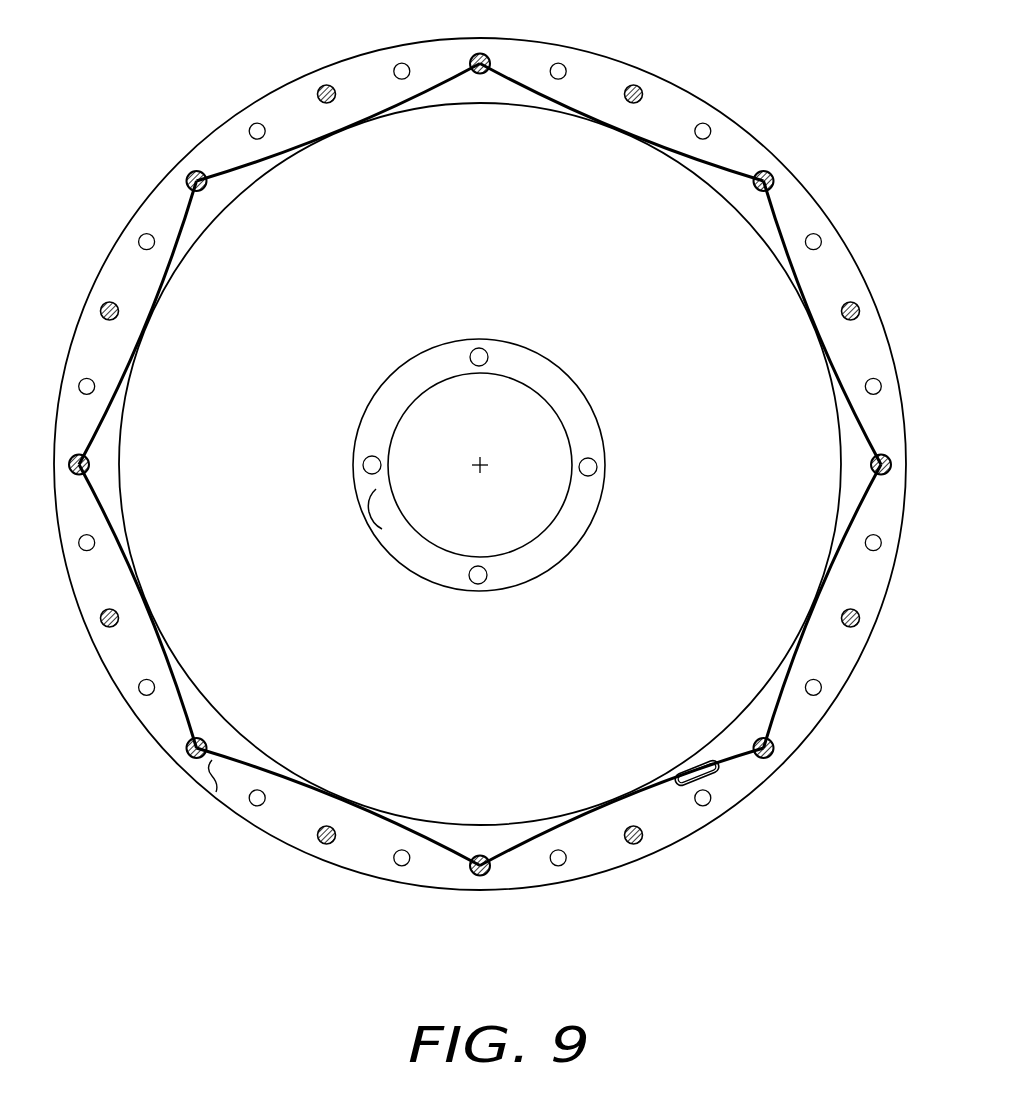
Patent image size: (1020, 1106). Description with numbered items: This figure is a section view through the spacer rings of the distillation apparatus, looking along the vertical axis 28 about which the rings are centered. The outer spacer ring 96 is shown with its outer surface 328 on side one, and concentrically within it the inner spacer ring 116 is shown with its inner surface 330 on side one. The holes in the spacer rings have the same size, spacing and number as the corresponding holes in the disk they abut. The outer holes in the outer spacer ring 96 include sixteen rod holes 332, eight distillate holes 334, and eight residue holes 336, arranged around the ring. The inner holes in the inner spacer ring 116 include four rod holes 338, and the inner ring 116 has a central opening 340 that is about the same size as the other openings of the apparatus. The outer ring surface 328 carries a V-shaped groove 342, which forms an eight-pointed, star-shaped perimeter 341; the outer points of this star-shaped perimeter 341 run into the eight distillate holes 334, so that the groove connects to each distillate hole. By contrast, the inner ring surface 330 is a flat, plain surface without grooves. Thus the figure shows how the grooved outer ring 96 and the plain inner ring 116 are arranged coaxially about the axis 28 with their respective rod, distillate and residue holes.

The vertical axis 28 is at (482, 468).
The outer spacer ring 96 is at (218, 802).
The inner spacer ring 116 is at (392, 557).
The outer surface 328 is at (208, 775).
The inner surface 330 is at (370, 512).
The rod holes 332 is at (400, 868).
The distillate holes 334 is at (478, 877).
The residue holes 336 is at (323, 845).
The rod holes 338 is at (478, 584).
The opening 340 is at (462, 555).
The star-shaped perimeter 341 is at (580, 816).
The V-shaped groove 342 is at (683, 783).